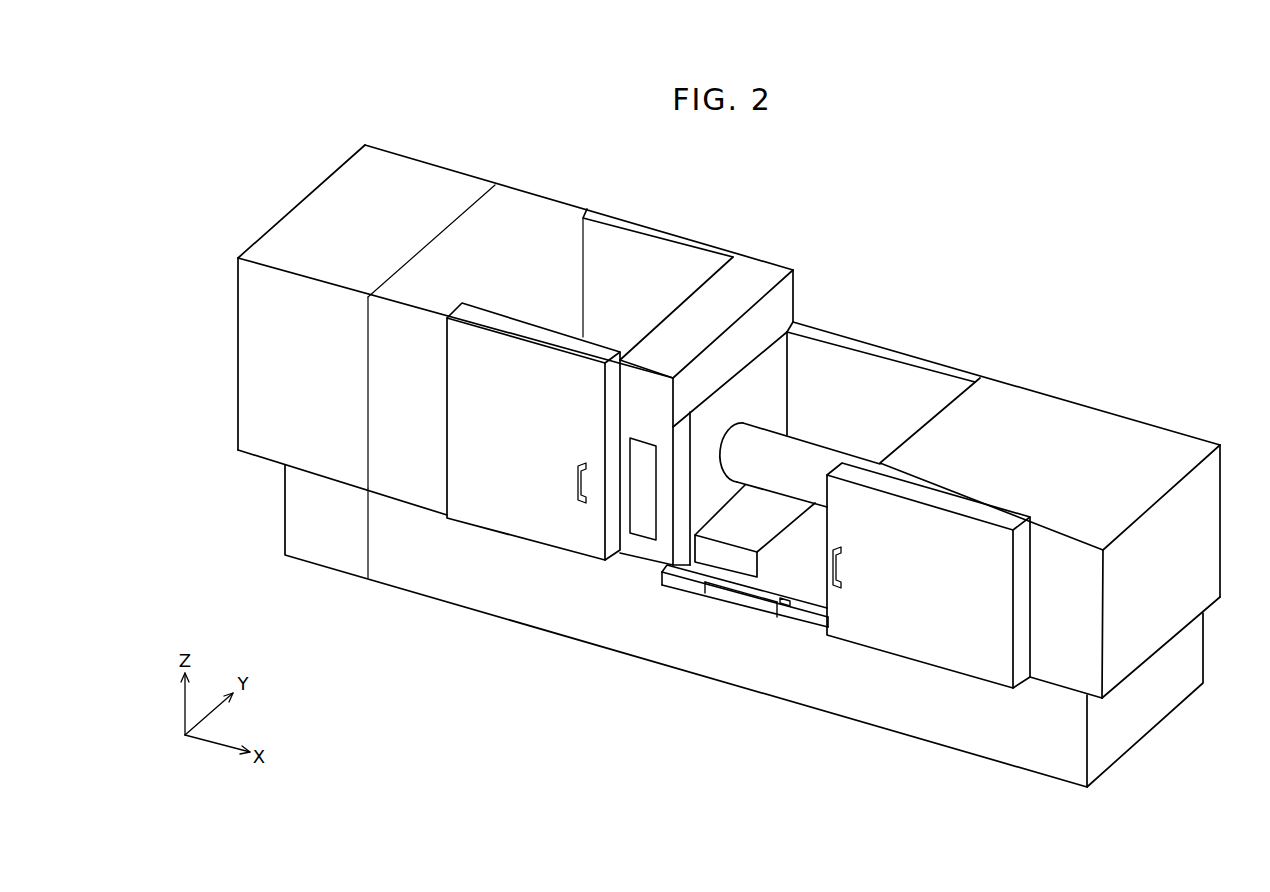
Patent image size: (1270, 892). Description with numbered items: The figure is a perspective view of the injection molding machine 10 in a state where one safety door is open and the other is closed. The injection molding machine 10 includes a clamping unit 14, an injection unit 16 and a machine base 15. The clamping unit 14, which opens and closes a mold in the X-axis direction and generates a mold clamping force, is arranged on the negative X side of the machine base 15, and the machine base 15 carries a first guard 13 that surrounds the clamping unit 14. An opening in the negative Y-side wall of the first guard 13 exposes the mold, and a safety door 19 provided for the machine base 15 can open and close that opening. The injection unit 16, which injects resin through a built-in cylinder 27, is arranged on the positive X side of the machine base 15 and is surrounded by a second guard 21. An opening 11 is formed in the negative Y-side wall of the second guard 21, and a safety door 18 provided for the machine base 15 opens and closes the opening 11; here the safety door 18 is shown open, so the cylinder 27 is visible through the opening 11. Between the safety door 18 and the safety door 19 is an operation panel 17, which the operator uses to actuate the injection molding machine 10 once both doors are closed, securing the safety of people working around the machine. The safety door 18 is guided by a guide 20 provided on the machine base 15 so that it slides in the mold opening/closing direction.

The injection molding machine 10 is at (712, 207).
The opening 11 is at (682, 538).
The first guard 13 is at (255, 385).
The clamping unit 14 is at (452, 180).
The machine base 15 is at (853, 697).
The injection unit 16 is at (1078, 400).
The operation panel 17 is at (643, 530).
The safety door 18 is at (905, 628).
The safety door 19 is at (517, 512).
The guide 20 is at (756, 628).
The second guard 21 is at (1060, 658).
The cylinder 27 is at (797, 438).